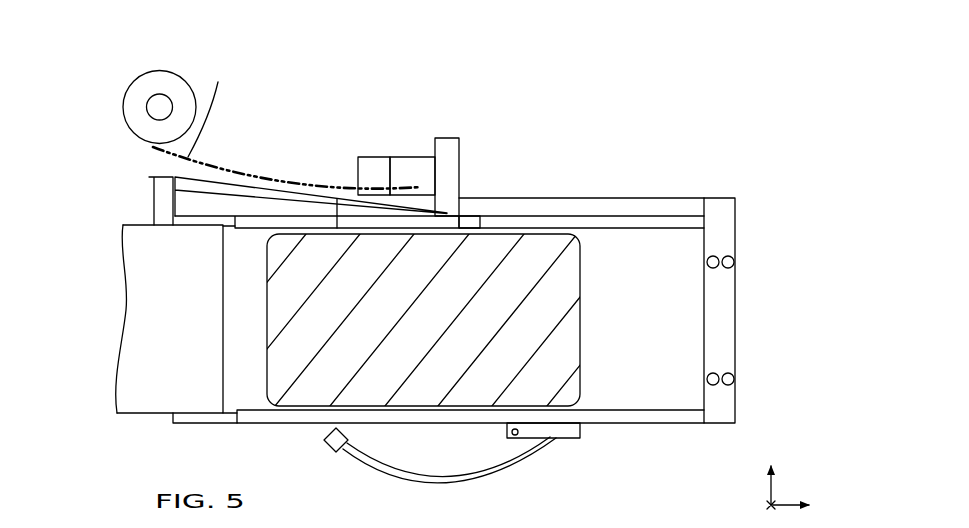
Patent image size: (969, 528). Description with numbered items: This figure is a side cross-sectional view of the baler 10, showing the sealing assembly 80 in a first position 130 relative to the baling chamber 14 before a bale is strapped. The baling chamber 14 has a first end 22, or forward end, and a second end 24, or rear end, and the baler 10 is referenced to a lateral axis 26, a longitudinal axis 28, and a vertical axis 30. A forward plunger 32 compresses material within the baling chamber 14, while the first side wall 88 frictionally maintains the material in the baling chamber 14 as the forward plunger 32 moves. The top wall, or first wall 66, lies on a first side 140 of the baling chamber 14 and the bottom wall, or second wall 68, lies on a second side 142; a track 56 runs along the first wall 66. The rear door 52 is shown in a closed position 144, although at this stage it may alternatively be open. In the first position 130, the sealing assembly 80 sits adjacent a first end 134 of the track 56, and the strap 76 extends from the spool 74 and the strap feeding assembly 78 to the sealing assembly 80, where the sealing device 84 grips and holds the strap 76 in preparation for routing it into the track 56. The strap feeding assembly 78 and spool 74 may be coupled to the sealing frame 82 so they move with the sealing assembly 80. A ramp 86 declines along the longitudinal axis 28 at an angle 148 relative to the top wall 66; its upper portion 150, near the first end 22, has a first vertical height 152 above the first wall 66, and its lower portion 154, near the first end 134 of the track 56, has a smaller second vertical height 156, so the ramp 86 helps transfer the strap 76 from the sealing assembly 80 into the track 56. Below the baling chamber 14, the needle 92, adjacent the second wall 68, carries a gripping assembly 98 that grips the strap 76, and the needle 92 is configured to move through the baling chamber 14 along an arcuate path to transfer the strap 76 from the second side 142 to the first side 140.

The baler 10 is at (543, 84).
The baling chamber 14 is at (621, 330).
The first end 22 is at (109, 216).
The second end 24 is at (743, 359).
The lateral axis 26 is at (767, 504).
The longitudinal axis 28 is at (789, 504).
The vertical axis 30 is at (770, 487).
The forward plunger 32 is at (132, 397).
The rear door 52 is at (737, 285).
The track 56 is at (518, 198).
The first wall 66 is at (673, 197).
The second wall 68 is at (618, 423).
The spool 74 is at (128, 88).
The strap 76 is at (207, 106).
The strap feeding assembly 78 is at (382, 157).
The sealing assembly 80 is at (410, 84).
The sealing frame 82 is at (453, 138).
The sealing device 84 is at (418, 157).
The ramp 86 is at (255, 187).
The first side wall 88 is at (652, 402).
The needle 92 is at (448, 483).
The gripping assembly 98 is at (332, 450).
The first position 130 is at (455, 57).
The first end 134 is at (455, 206).
The first side 140 is at (615, 174).
The second side 142 is at (643, 439).
The closed position 144 is at (753, 222).
The angle 148 is at (337, 200).
The upper portion 150 is at (220, 156).
The first vertical height 152 is at (153, 205).
The lower portion 154 is at (392, 246).
The second vertical height 156 is at (481, 221).